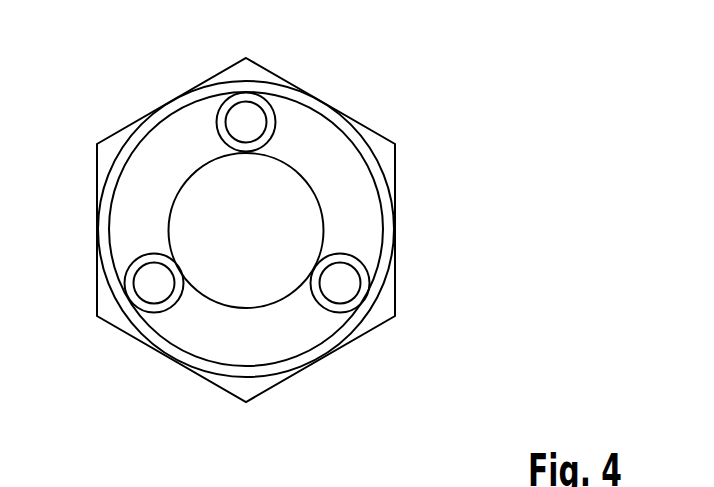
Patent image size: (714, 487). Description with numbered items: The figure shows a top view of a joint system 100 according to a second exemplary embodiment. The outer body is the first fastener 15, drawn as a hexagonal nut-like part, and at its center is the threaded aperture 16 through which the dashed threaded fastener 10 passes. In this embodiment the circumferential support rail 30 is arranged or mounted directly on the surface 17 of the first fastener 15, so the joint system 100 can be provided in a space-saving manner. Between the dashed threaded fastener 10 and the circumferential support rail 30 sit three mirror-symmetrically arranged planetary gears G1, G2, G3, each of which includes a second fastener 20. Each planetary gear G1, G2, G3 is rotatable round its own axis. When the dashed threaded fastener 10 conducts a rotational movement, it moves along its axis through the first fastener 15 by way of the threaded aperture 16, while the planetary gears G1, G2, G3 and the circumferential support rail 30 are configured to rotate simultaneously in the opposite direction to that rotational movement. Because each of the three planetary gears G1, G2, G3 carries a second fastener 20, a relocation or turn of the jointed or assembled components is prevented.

The joint system 100 is at (263, 207).
The first fastener 15 is at (108, 153).
The circumferential support rail 30 is at (358, 145).
The dashed threaded fastener 10 is at (209, 229).
The surface 17 is at (340, 177).
The threaded aperture 16 is at (291, 238).
The second fastener 20 is at (260, 211).
The planetary gear G1 is at (229, 108).
The planetary gear G2 is at (152, 305).
The planetary gear G3 is at (363, 266).